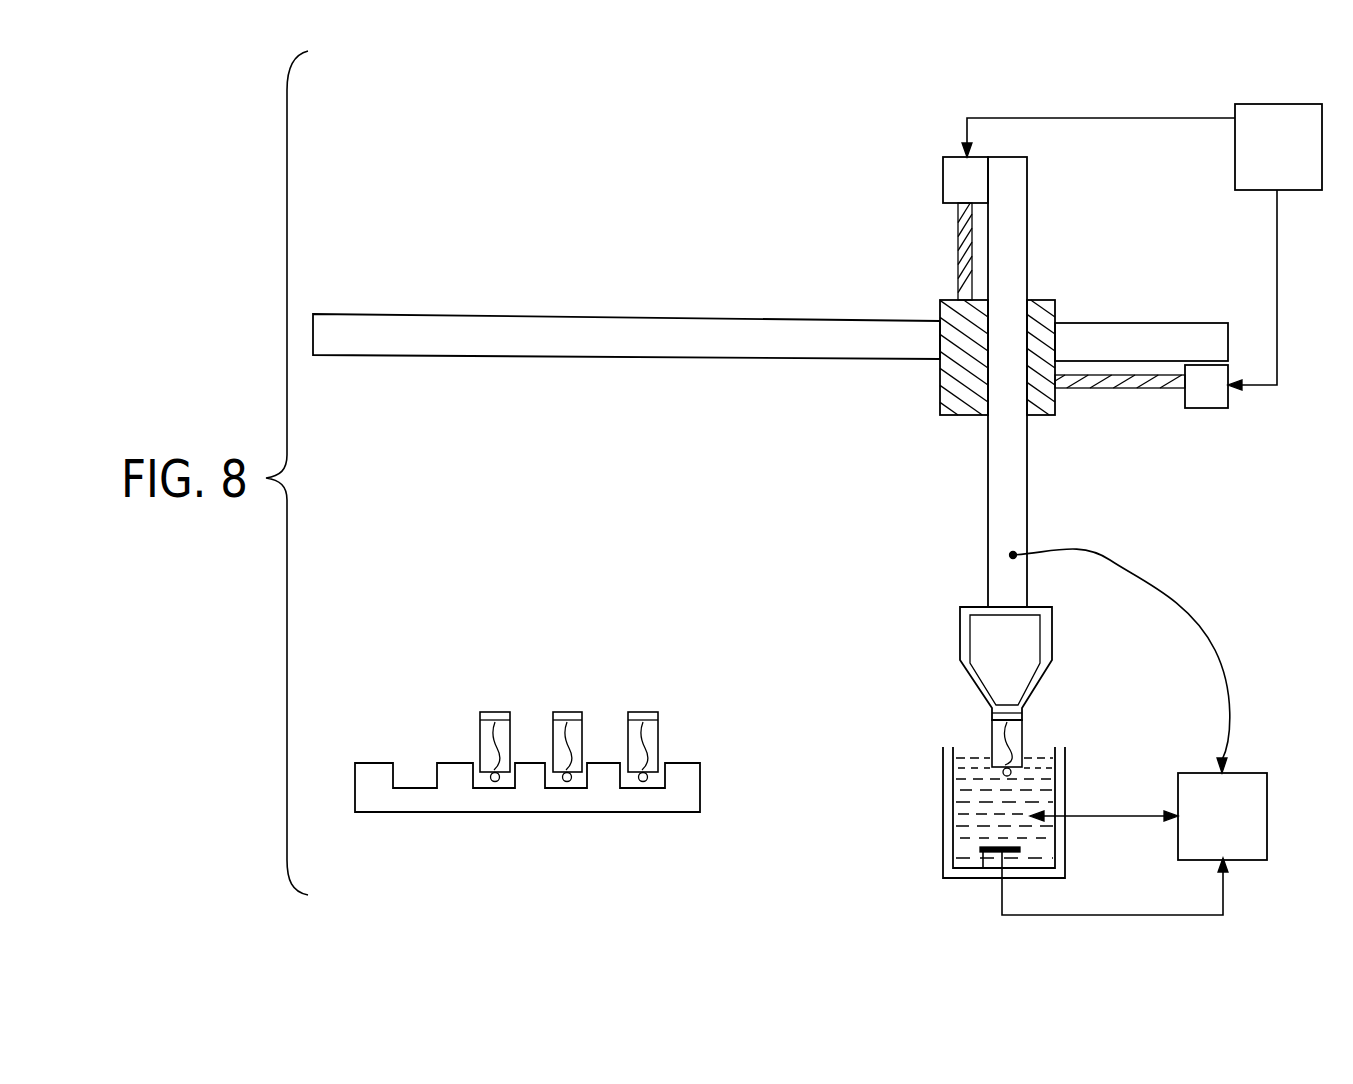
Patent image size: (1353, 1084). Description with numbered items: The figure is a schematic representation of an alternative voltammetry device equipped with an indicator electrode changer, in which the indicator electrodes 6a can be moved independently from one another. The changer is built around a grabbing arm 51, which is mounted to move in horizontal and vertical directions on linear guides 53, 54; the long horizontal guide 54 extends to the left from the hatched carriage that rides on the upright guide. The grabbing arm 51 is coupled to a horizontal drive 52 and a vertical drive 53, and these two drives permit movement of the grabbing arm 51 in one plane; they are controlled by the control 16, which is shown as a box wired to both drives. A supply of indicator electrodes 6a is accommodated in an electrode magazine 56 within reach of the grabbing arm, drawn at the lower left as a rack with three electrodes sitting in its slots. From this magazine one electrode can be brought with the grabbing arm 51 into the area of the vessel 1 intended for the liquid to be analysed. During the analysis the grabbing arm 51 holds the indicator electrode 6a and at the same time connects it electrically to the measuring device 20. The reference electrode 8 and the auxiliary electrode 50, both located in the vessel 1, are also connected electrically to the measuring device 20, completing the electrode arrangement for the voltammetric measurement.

The control 16 is at (1142, 247).
The vertical drive 53 is at (1077, 473).
The horizontal drive 52 is at (1141, 365).
The linear guide 54 is at (792, 335).
The grabbing arm 51 is at (1045, 640).
The indicator electrode 6a is at (971, 716).
The vessel 1 is at (947, 802).
The reference electrode 8 is at (1042, 818).
The auxiliary electrode 50 is at (983, 868).
The measuring device 20 is at (1222, 816).
The electrode magazine 56 is at (600, 793).